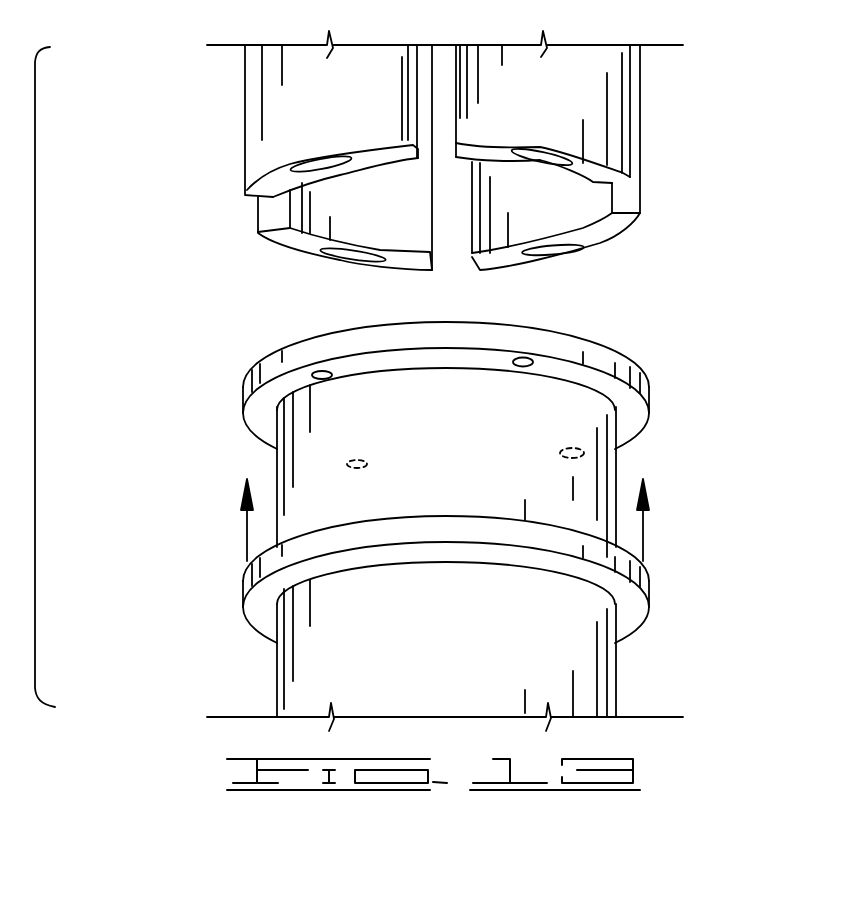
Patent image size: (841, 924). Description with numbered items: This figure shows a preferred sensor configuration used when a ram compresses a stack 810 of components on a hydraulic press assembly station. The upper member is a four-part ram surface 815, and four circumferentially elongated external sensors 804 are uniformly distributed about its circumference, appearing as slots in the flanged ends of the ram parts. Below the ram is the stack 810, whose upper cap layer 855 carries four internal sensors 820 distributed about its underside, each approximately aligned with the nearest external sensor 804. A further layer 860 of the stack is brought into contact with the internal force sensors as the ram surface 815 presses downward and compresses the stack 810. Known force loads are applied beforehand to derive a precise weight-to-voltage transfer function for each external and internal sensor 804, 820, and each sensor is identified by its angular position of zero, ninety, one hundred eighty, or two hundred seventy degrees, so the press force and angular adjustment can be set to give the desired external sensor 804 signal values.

The external sensor 804 is at (302, 172).
The stack 810 is at (233, 355).
The ram surface 815 is at (246, 120).
The internal sensor 820 is at (315, 382).
The cap layer 855 is at (650, 392).
The layer 860 is at (650, 593).